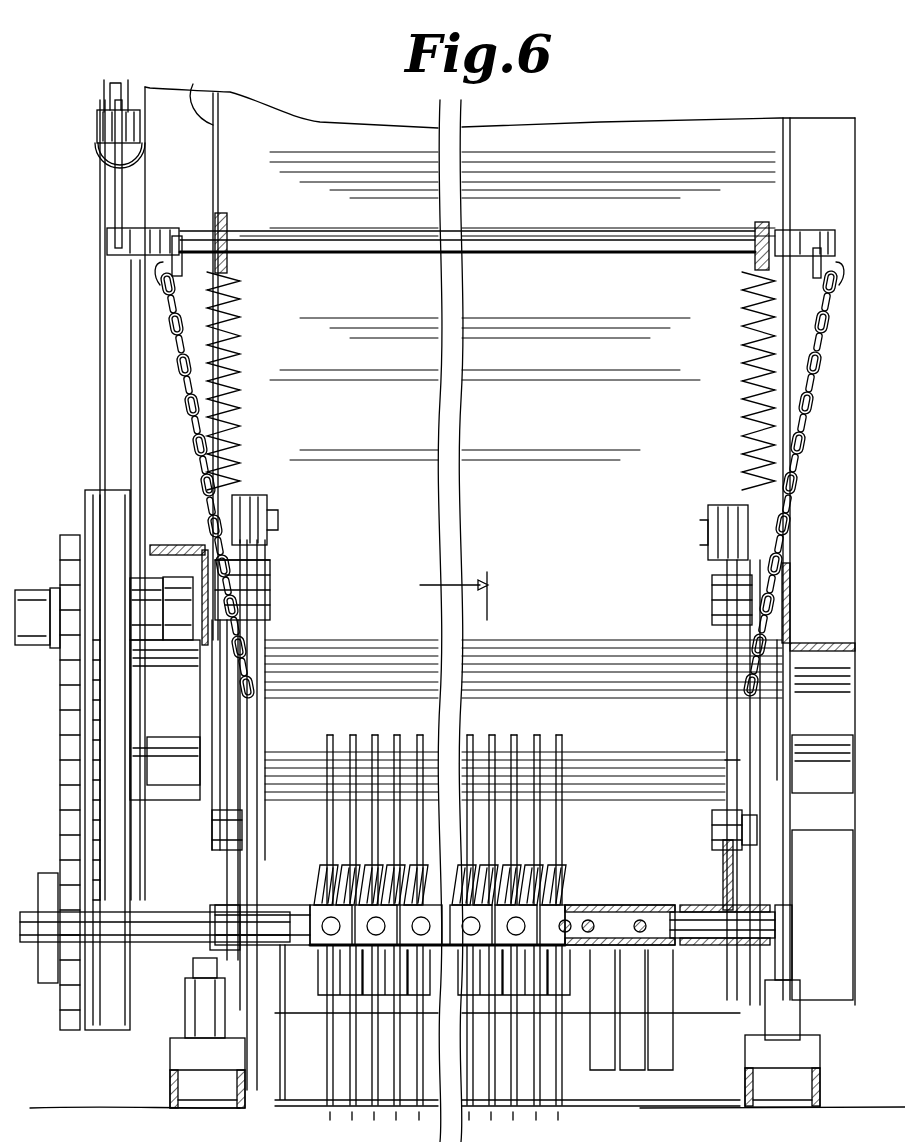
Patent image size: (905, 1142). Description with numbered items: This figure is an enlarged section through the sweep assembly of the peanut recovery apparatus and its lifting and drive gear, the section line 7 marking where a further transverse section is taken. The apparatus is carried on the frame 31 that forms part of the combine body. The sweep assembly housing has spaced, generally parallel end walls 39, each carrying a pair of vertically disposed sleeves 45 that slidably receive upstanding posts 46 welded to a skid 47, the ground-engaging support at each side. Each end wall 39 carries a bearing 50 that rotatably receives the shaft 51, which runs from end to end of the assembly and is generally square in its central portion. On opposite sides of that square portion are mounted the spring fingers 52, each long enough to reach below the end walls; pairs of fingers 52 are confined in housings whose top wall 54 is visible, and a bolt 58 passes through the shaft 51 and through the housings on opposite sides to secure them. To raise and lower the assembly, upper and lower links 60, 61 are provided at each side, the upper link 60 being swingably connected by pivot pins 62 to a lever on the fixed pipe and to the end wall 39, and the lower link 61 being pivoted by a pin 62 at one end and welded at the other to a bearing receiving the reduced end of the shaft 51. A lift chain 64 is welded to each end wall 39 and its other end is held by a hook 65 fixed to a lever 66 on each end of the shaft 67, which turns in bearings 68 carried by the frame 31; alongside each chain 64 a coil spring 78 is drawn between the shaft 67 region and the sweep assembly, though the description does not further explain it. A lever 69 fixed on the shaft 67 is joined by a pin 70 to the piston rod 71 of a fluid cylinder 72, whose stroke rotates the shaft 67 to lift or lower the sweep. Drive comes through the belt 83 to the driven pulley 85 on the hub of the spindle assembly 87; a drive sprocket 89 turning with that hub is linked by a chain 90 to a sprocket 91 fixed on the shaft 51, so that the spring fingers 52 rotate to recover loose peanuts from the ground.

The section line 7- 7 is at (448, 590).
The frame 31 is at (195, 84).
The end walls 39 is at (262, 775).
The sleeves 45 is at (200, 1005).
The upstanding posts 46 is at (192, 966).
The skid 47 is at (175, 1080).
The bearing 50 is at (292, 905).
The shaft 51 is at (650, 905).
The spring fingers 52 is at (420, 745).
The top wall 54 is at (338, 945).
The bolt 58 is at (548, 912).
The upper link 60 is at (230, 836).
The lower link 61 is at (228, 880).
The pivot pins 62 is at (278, 528).
The lift chain 64 is at (188, 452).
The hook 65 is at (158, 268).
The lever 66 is at (200, 195).
The shaft 67 is at (492, 255).
The bearings 68 is at (227, 222).
The lever 69 is at (115, 190).
The pin 70 is at (97, 124).
The piston rod 71 is at (106, 112).
The fluid cylinder 72 is at (96, 158).
The coil spring 78 is at (228, 394).
The belt 83 is at (100, 368).
The driven pulley 85 is at (93, 492).
The spindle assembly 87 is at (42, 575).
The drive sprocket 89 is at (74, 535).
The chain 90 is at (78, 855).
The sprocket 91 is at (80, 985).